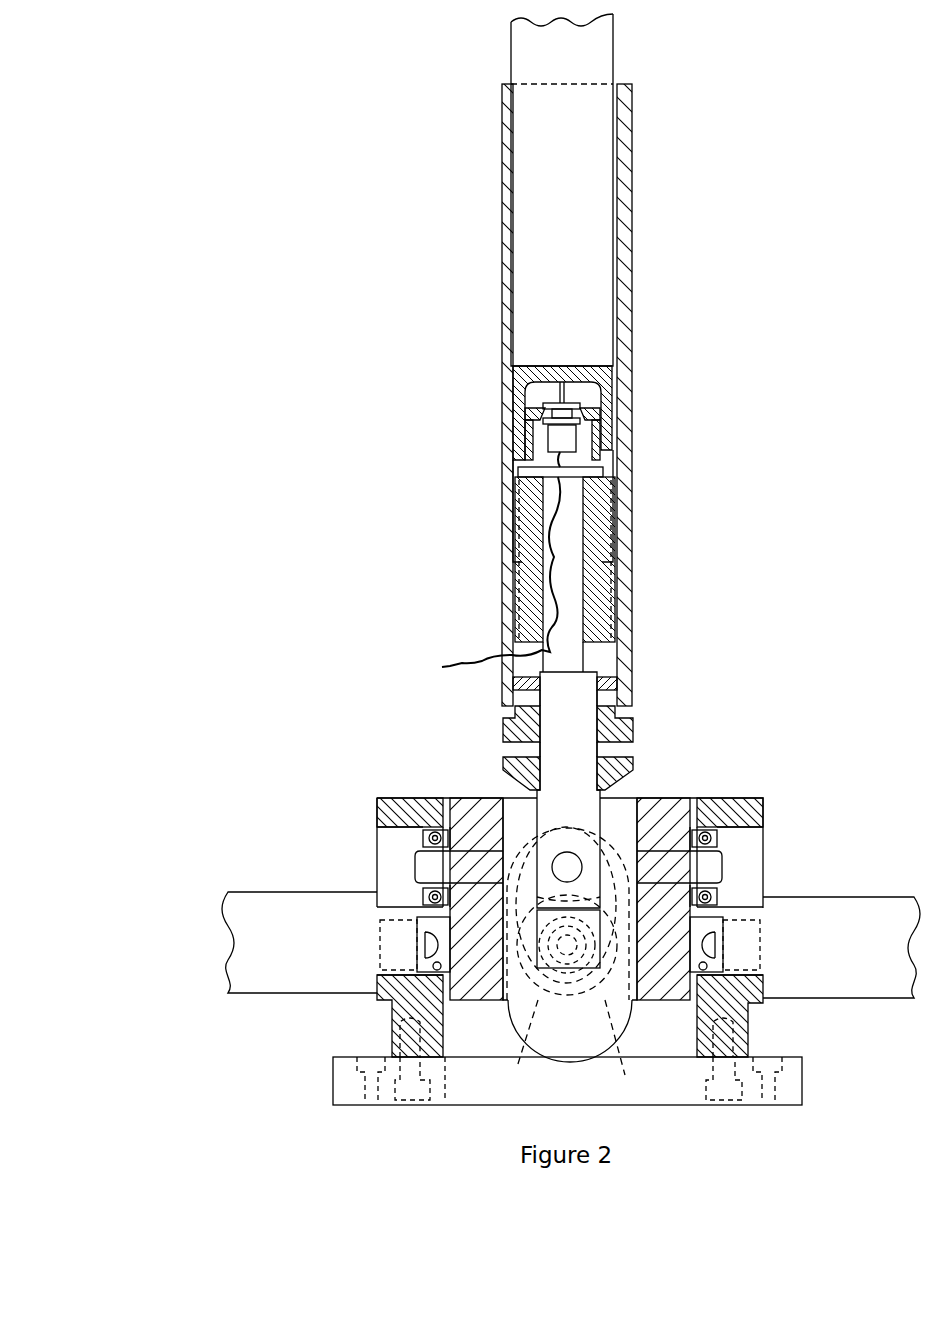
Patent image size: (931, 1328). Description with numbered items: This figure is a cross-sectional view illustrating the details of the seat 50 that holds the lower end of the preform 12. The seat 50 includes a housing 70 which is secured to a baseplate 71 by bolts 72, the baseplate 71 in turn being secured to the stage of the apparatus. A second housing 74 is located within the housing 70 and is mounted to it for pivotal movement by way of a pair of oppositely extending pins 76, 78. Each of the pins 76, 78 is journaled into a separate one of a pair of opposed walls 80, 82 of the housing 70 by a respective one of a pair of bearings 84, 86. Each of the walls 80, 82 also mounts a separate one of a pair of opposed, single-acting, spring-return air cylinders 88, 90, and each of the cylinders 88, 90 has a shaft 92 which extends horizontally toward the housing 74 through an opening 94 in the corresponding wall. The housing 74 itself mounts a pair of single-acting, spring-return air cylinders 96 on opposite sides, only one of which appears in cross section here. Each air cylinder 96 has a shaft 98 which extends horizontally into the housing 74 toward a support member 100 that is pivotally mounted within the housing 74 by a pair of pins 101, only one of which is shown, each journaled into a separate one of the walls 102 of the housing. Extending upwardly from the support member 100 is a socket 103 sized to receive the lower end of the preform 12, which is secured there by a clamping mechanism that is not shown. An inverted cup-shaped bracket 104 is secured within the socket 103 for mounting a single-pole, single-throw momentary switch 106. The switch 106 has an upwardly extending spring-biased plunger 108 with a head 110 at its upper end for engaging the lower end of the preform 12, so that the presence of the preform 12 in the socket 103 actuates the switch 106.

The preform 12 is at (530, 62).
The seat 50 is at (697, 660).
The housing 70 is at (752, 1013).
The baseplate 71 is at (802, 1092).
The bolts 72 is at (405, 1088).
The second housing 74 is at (665, 810).
The pin 76 is at (712, 870).
The pin 78 is at (428, 860).
The wall 80 is at (750, 990).
The wall 82 is at (390, 985).
The bearing 84 is at (716, 838).
The bearing 86 is at (433, 830).
The air cylinder 88 is at (903, 965).
The air cylinder 90 is at (278, 965).
The shaft 92 is at (430, 942).
The opening 94 is at (440, 969).
The air cylinder 96 is at (592, 990).
The shaft 98 is at (562, 963).
The support member 100 is at (590, 808).
The pin 101 is at (560, 855).
The wall 102 is at (627, 810).
The socket 103 is at (628, 500).
The inverted cup-shaped bracket 104 is at (598, 422).
The momentary switch 106 is at (555, 440).
The plunger 108 is at (563, 392).
The head 110 is at (610, 371).